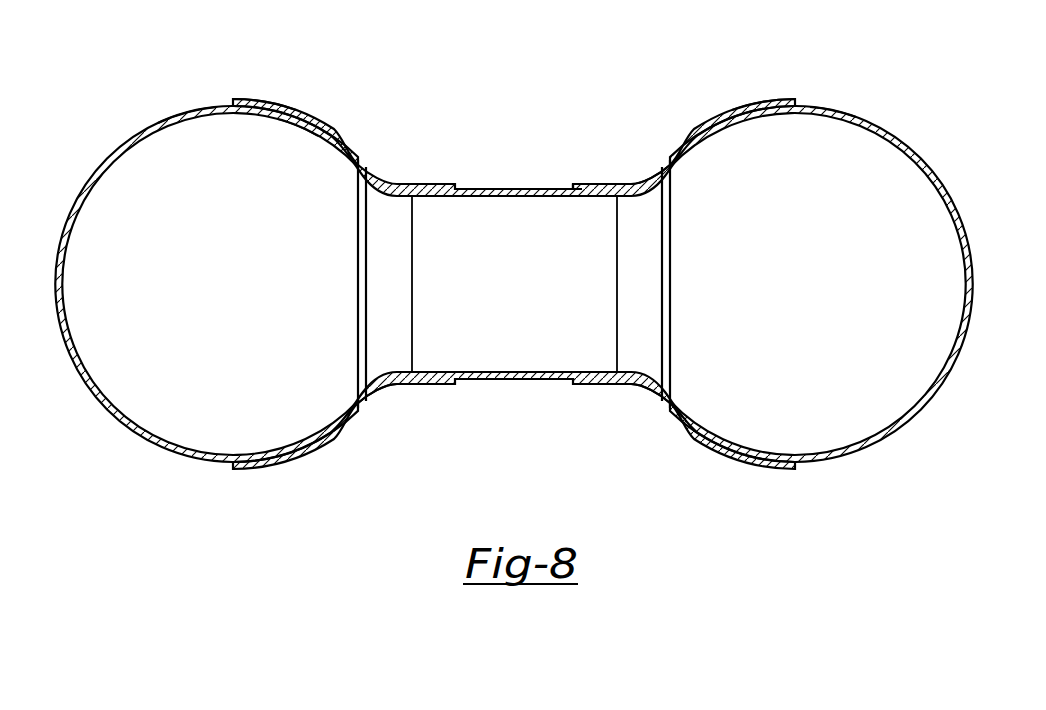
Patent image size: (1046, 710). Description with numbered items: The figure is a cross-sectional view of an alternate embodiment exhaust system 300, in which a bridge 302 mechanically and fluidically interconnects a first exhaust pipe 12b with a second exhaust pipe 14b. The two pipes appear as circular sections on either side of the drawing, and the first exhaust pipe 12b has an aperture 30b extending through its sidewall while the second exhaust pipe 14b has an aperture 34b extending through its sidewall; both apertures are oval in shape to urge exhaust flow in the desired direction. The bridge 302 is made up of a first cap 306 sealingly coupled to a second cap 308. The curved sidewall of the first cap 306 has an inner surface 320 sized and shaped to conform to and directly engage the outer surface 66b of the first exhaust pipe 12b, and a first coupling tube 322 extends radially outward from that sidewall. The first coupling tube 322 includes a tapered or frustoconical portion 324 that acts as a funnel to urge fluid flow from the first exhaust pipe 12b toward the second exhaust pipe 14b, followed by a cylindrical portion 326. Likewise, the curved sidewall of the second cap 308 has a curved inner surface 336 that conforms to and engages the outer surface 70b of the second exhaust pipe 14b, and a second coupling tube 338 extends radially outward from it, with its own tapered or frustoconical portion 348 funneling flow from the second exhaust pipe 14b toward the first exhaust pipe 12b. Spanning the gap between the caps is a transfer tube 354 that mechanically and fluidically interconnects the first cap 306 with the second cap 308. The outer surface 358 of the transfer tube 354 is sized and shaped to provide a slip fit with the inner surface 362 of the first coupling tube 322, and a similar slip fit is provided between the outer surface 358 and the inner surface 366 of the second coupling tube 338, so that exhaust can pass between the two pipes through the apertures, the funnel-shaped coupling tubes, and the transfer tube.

The exhaust system 300 is at (803, 509).
The bridge 302 is at (345, 125).
The first cap 306 is at (733, 112).
The second cap 308 is at (263, 100).
The inner surface 320 is at (655, 397).
The first coupling tube 322 is at (603, 184).
The tapered or frustoconical portion 324 is at (645, 190).
The cylindrical portion 326 is at (585, 184).
The curved inner surface 336 is at (285, 118).
The second coupling tube 338 is at (438, 385).
The tapered or frustoconical portion 348 is at (395, 380).
The transfer tube 354 is at (477, 184).
The outer surface 358 is at (522, 189).
The inner surface 362 is at (617, 198).
The inner surface 366 is at (410, 198).
The first exhaust pipe 12b is at (888, 132).
The second exhaust pipe 14b is at (137, 135).
The aperture 30b is at (357, 190).
The aperture 34b is at (672, 187).
The outer surface 66b is at (820, 108).
The outer surface 70b is at (195, 108).